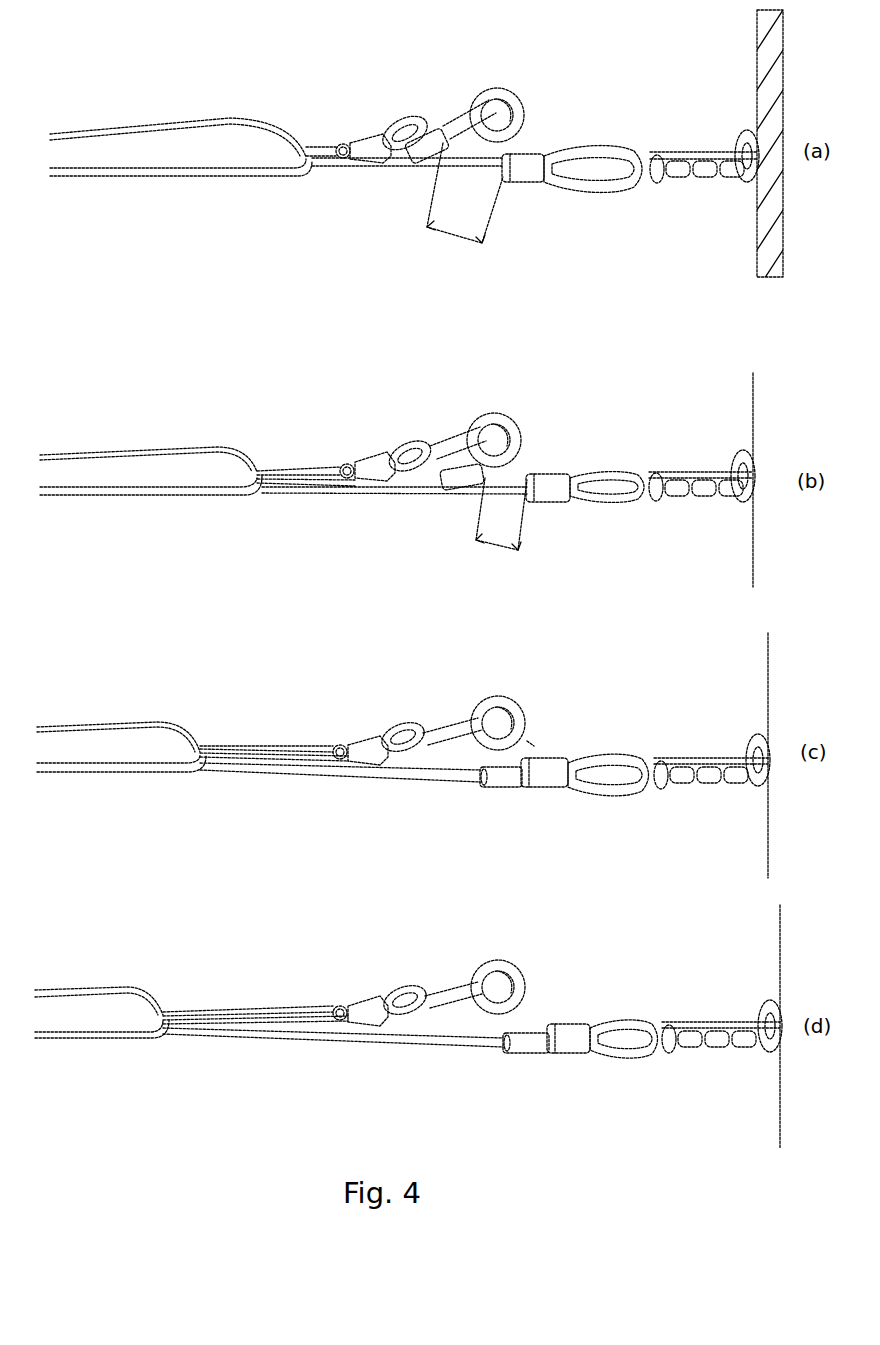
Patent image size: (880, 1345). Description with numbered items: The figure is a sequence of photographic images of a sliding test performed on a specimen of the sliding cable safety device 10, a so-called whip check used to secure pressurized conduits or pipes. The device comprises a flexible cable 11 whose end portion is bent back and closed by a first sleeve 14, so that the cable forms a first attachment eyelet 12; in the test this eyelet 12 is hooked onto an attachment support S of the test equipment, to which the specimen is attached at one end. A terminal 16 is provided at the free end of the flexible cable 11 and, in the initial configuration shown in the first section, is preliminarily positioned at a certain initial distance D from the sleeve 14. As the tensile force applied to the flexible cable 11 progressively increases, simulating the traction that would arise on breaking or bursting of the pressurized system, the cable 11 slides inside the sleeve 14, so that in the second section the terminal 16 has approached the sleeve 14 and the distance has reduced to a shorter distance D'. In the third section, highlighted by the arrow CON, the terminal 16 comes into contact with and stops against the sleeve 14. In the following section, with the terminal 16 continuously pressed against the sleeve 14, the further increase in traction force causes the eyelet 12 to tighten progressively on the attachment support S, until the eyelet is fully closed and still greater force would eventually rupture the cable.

The safety device 10 is at (378, 83).
The flexible cable 11 is at (343, 167).
The first attachment eyelet 12 is at (597, 153).
The first sleeve 14 is at (527, 163).
The terminal 16 is at (420, 150).
The attachment support S is at (697, 165).
The initial distance D is at (463, 219).
The shorter distance D' is at (494, 541).
The arrow indicating contact CON is at (531, 744).